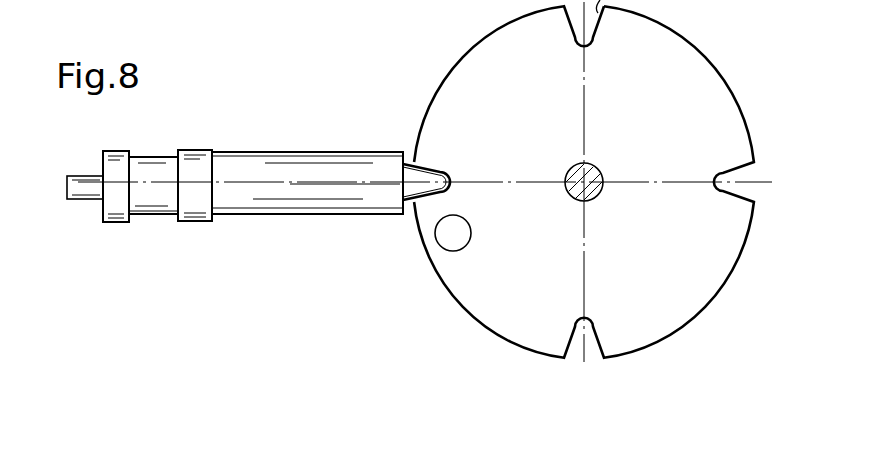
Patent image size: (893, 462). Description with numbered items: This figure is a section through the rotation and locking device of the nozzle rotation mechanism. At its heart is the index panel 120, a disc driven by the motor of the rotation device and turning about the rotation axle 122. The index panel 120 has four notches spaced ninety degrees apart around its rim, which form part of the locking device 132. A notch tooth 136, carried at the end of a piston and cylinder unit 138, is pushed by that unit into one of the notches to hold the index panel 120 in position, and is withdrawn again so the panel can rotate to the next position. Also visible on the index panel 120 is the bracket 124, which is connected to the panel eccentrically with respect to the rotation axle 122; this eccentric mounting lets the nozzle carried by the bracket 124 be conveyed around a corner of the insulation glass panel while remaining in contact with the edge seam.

The index panel 120 is at (466, 62).
The rotation axle 122 is at (600, 168).
The bracket 124 is at (451, 248).
The locking device 132 is at (379, 100).
The notch tooth 136 is at (422, 188).
The piston and cylinder unit 138 is at (246, 160).